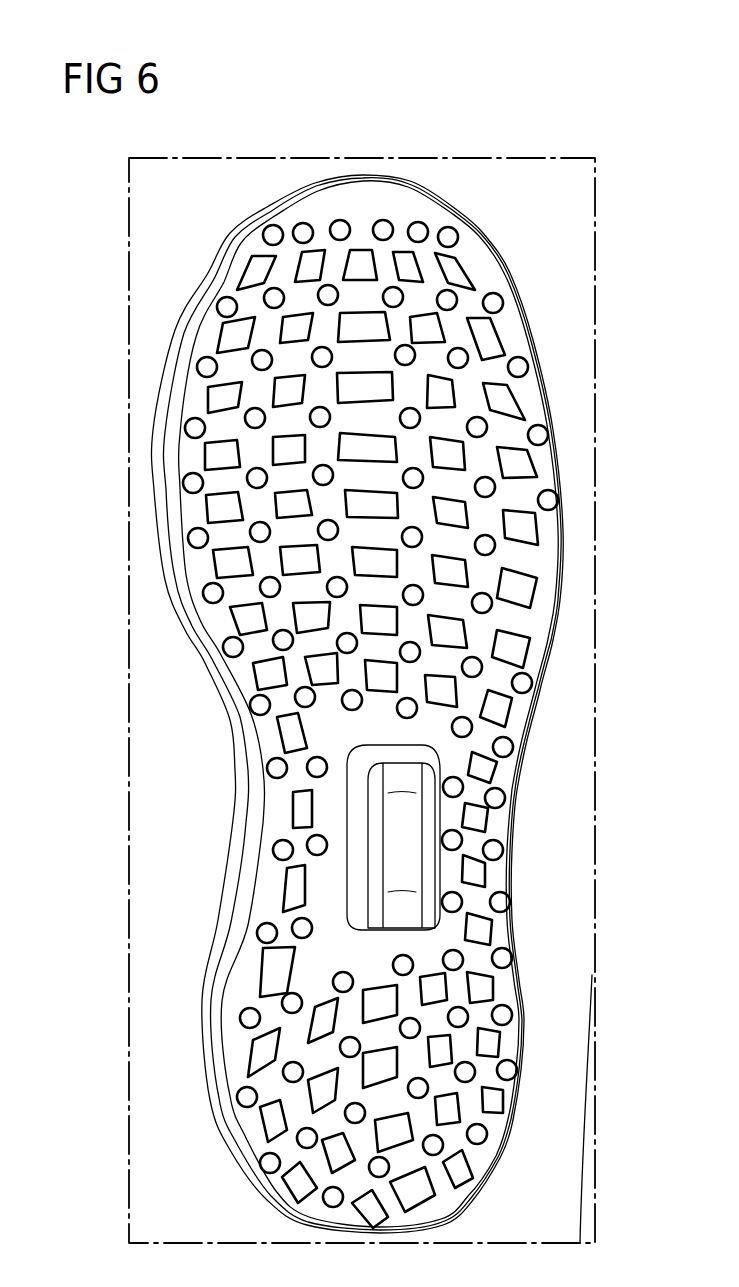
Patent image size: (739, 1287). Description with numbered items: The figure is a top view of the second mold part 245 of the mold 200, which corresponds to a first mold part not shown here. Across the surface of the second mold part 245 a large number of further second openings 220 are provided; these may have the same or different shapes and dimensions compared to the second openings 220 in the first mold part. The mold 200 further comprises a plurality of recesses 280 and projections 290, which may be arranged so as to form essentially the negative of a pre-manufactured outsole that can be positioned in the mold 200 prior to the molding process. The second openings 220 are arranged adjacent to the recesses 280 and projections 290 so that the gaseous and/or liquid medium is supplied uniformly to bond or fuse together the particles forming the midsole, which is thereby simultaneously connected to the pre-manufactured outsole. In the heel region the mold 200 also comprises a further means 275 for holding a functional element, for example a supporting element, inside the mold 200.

The mold 200 is at (155, 282).
The second openings 220 is at (309, 265).
The second mold part 245 is at (352, 193).
The further means for holding a functional element 275 is at (403, 817).
The recess 280 is at (283, 642).
The projection 290 is at (515, 523).